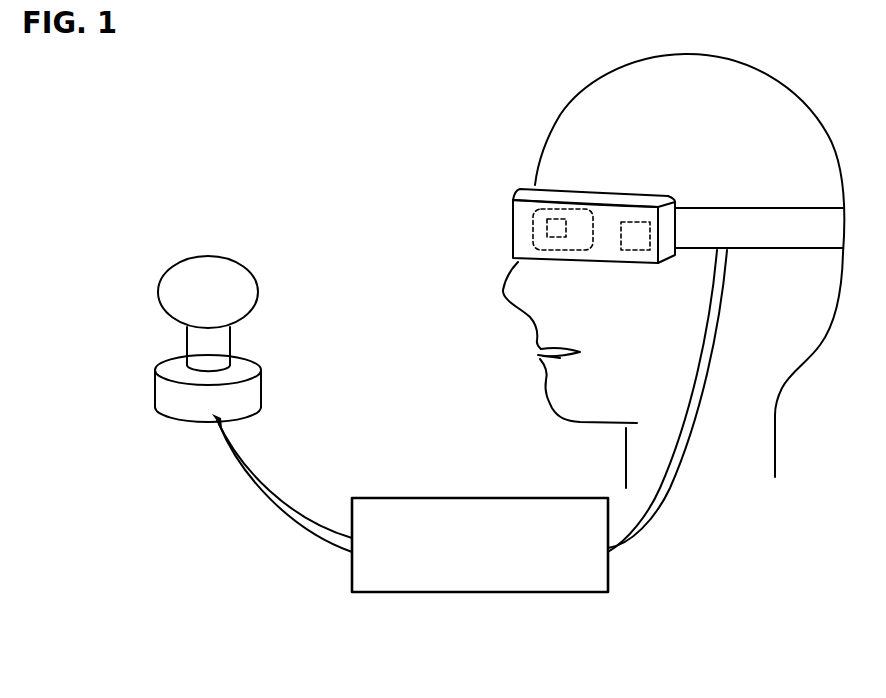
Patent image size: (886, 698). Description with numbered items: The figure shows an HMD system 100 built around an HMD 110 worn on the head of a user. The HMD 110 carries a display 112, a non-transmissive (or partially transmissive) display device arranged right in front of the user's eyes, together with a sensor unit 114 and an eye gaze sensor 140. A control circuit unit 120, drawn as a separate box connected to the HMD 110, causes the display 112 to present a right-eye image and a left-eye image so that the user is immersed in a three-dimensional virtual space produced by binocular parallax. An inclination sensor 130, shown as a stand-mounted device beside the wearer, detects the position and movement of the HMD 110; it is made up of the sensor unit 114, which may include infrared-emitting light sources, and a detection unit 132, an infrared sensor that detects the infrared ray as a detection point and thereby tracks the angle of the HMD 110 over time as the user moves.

The HMD system 100 is at (262, 97).
The HMD 110 is at (510, 190).
The display 112 is at (578, 228).
The sensor unit 114 is at (623, 241).
The control circuit unit 120 is at (367, 572).
The inclination sensor 130 is at (285, 376).
The detection unit 132 is at (251, 292).
The eye gaze sensor 140 is at (558, 230).